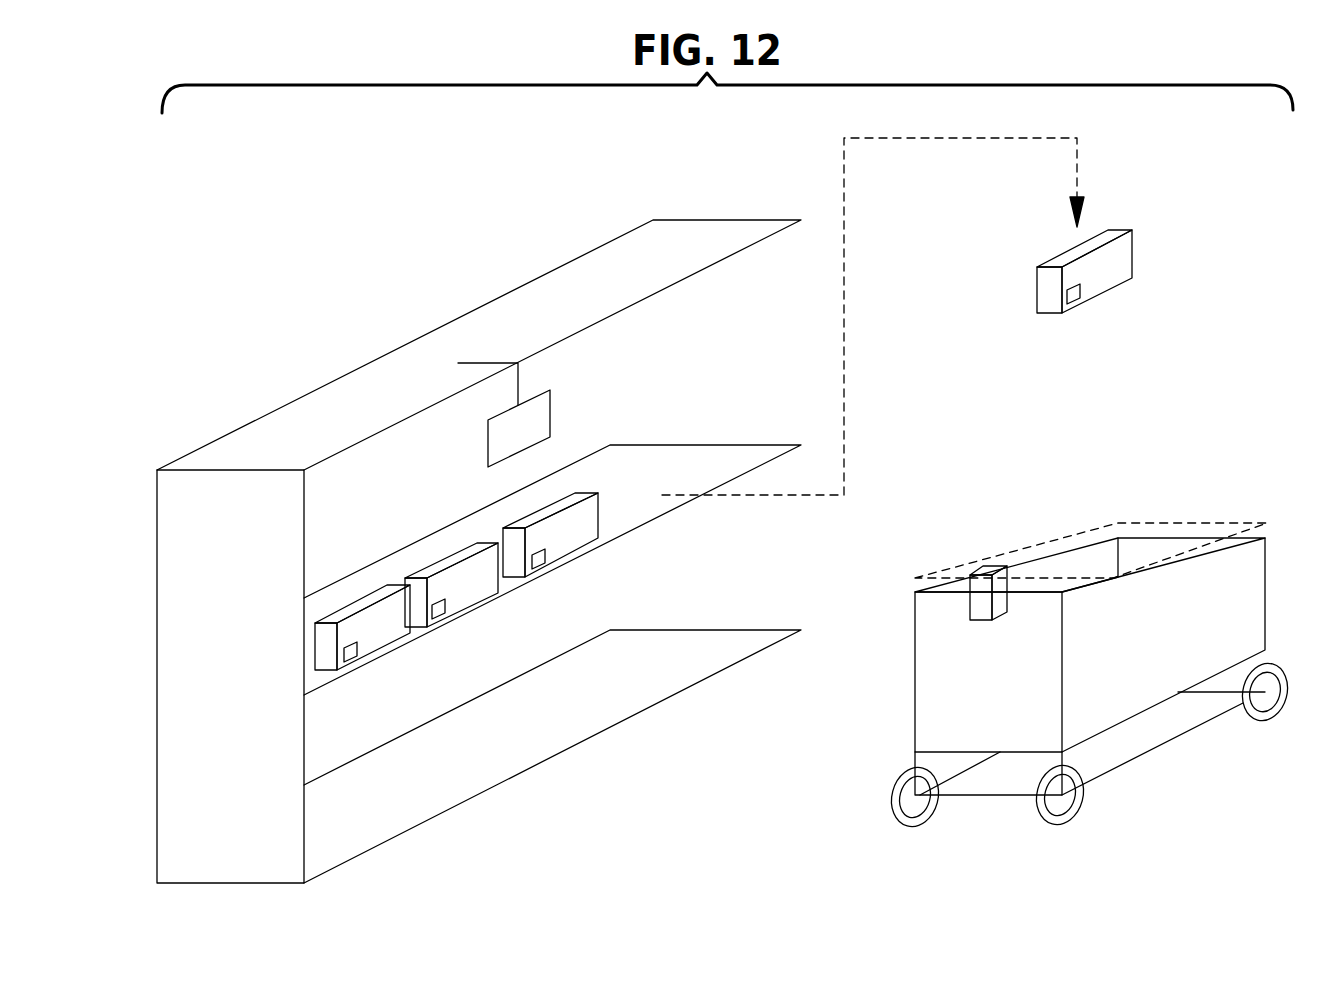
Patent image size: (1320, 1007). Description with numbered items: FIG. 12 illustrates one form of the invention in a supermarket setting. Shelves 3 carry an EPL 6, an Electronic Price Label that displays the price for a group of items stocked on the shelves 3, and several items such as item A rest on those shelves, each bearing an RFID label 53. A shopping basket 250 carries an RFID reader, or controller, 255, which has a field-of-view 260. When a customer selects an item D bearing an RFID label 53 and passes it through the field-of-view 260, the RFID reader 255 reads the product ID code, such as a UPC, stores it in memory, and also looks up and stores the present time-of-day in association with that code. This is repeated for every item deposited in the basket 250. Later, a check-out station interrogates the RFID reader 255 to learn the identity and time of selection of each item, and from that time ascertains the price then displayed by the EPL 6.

The shelves 3 is at (245, 579).
The EPL 6 is at (552, 412).
The article A is at (390, 644).
The RFID label 53 is at (350, 657).
The item D is at (1135, 262).
The shopping basket 250 is at (852, 824).
The RFID reader 255 is at (998, 621).
The field-of-view 260 is at (1182, 522).